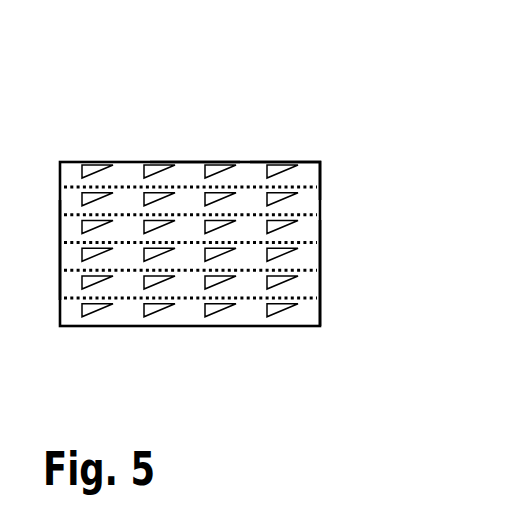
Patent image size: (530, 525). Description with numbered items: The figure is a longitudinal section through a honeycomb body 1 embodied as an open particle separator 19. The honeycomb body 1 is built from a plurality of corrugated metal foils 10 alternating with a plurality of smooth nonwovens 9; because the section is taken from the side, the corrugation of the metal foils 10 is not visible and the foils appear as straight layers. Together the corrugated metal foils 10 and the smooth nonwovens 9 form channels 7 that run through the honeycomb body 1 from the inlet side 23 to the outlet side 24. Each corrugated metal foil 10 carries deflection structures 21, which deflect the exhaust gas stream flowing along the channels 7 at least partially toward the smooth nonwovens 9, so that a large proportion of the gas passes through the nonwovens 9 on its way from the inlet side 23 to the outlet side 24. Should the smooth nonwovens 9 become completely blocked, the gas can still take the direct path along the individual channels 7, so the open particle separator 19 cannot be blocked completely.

The honeycomb body 1 is at (213, 137).
The channels 7 is at (315, 167).
The smooth nonwovens 9 is at (252, 290).
The corrugated metal foils 10 is at (180, 312).
The particle separator 19 is at (191, 147).
The deflection structures 21 is at (148, 165).
The inlet side 23 is at (53, 235).
The outlet side 24 is at (323, 258).